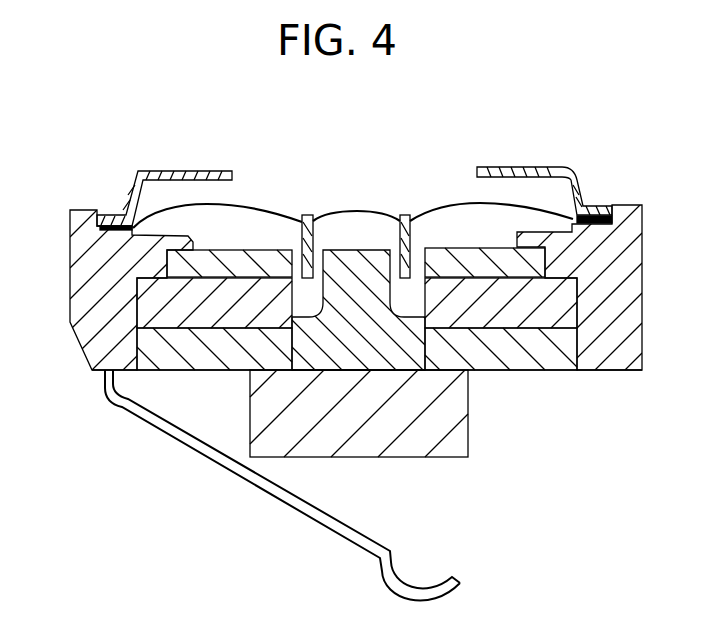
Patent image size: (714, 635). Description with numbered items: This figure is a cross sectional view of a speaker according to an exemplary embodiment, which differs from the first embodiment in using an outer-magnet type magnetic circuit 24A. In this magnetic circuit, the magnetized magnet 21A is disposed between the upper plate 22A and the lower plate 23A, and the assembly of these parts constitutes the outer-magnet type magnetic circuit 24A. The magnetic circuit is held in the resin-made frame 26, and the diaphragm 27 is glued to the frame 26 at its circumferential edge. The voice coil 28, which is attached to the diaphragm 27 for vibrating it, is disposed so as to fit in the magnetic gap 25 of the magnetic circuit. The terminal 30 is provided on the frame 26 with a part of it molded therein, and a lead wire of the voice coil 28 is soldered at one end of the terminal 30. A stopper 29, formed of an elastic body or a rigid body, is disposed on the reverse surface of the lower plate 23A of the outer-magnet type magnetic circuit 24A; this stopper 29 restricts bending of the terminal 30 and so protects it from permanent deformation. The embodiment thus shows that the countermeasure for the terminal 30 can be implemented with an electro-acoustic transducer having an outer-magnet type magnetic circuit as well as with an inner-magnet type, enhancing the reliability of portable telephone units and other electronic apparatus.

The magnetized magnet 21A is at (462, 303).
The upper plate 22A is at (488, 257).
The lower plate 23A is at (403, 355).
The outer-magnet type magnetic circuit 24A is at (528, 383).
The magnetic gap 25 is at (310, 293).
The frame 26 is at (623, 250).
The diaphragm 27 is at (443, 212).
The voice coil 28 is at (305, 215).
The stopper 29 is at (323, 440).
The terminal 30 is at (188, 442).